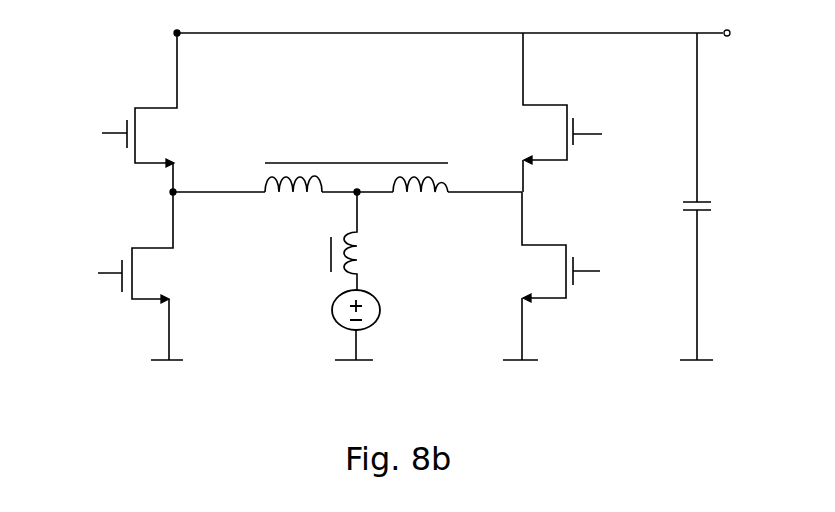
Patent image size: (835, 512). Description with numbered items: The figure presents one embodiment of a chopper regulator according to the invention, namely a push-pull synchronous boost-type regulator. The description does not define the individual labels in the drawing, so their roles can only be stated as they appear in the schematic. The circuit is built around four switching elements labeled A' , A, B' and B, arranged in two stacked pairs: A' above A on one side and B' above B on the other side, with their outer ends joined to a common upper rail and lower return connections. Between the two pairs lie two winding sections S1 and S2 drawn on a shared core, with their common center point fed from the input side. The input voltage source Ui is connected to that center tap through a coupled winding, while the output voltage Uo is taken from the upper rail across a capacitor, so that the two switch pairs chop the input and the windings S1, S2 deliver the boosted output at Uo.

The upper left transistor A' is at (109, 112).
The lower left transistor A is at (112, 276).
The upper right transistor B' is at (580, 112).
The lower right transistor B is at (566, 276).
The first coil winding S1 is at (348, 164).
The second coil winding S2 is at (422, 164).
The input voltage source Ui is at (331, 276).
The output voltage terminal Uo is at (743, 33).